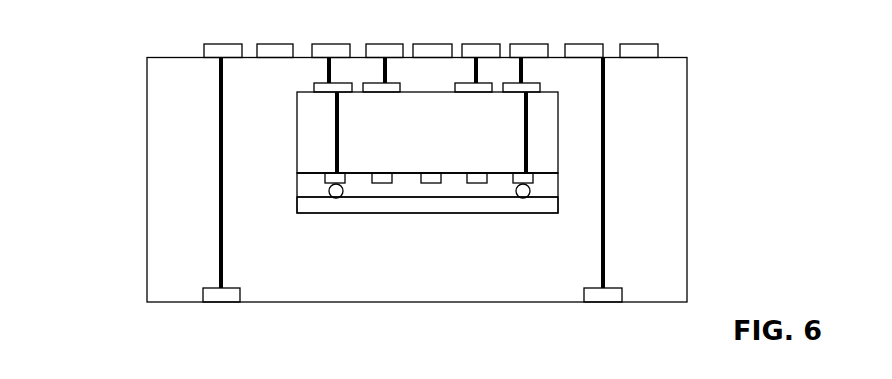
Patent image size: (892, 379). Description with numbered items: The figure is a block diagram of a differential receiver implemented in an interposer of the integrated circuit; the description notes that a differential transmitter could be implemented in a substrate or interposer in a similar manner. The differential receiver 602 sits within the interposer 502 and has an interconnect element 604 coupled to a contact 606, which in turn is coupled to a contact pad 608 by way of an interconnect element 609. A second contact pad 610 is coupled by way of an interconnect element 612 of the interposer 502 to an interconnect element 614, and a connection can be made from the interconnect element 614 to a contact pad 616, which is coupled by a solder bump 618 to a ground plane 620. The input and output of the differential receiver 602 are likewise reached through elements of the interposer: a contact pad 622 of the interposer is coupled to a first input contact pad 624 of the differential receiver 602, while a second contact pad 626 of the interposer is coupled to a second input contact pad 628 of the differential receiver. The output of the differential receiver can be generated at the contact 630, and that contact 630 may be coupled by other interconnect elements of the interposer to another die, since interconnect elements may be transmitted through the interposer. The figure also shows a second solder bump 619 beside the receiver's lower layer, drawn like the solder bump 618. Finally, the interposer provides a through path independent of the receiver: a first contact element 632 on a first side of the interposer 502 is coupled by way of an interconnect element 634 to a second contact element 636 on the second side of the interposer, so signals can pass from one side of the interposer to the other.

The interposer 502 is at (687, 95).
The differential receiver 602 is at (560, 153).
The interconnect element 604 is at (535, 130).
The contact 606 is at (538, 88).
The contact pad 608 is at (543, 43).
The interconnect element 609 is at (523, 73).
The second contact pad 610 is at (325, 43).
The interconnect element 612 is at (327, 65).
The interconnect element 614 is at (333, 129).
The contact pad 616 is at (325, 180).
The solder bump 618 is at (337, 200).
The solder ball 619 is at (530, 192).
The ground plane 620 is at (370, 215).
The contact pad 622 is at (393, 43).
The first input contact pad 624 is at (403, 85).
The second contact pad 626 is at (475, 43).
The second input contact pad 628 is at (513, 95).
The contact 630 is at (428, 185).
The first contact element 632 is at (225, 43).
The interconnect element 634 is at (222, 175).
The second contact element 636 is at (237, 287).